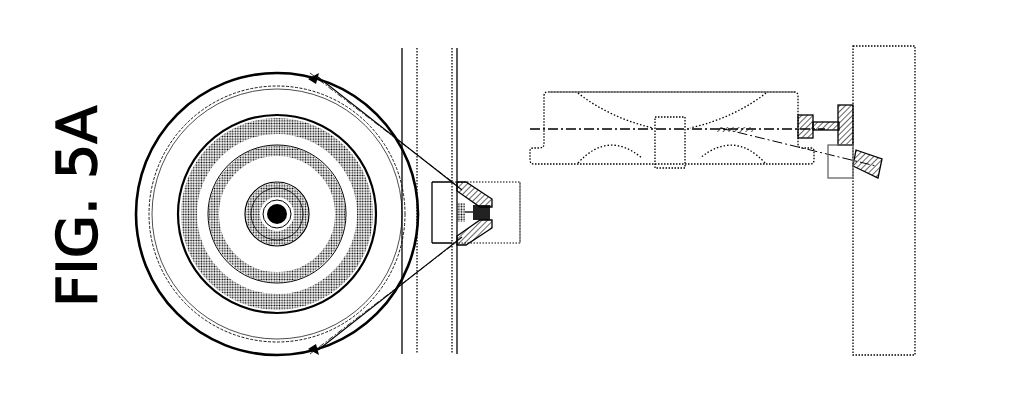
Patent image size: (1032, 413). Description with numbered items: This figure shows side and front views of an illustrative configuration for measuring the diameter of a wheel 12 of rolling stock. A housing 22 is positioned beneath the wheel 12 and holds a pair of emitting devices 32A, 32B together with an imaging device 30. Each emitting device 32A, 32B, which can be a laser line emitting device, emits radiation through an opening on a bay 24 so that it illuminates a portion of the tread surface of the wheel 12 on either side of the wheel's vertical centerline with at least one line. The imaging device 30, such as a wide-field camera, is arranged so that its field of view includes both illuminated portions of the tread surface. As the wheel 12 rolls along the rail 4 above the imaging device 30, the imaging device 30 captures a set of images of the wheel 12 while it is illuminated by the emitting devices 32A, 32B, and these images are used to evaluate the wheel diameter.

The wheel 12 is at (166, 132).
The axle / rail 4 is at (402, 92).
The housing 22 is at (522, 230).
The imaging device 30 is at (491, 213).
The emitting device 32A is at (478, 238).
The emitting device 32B is at (472, 190).
The bay 24 is at (838, 178).